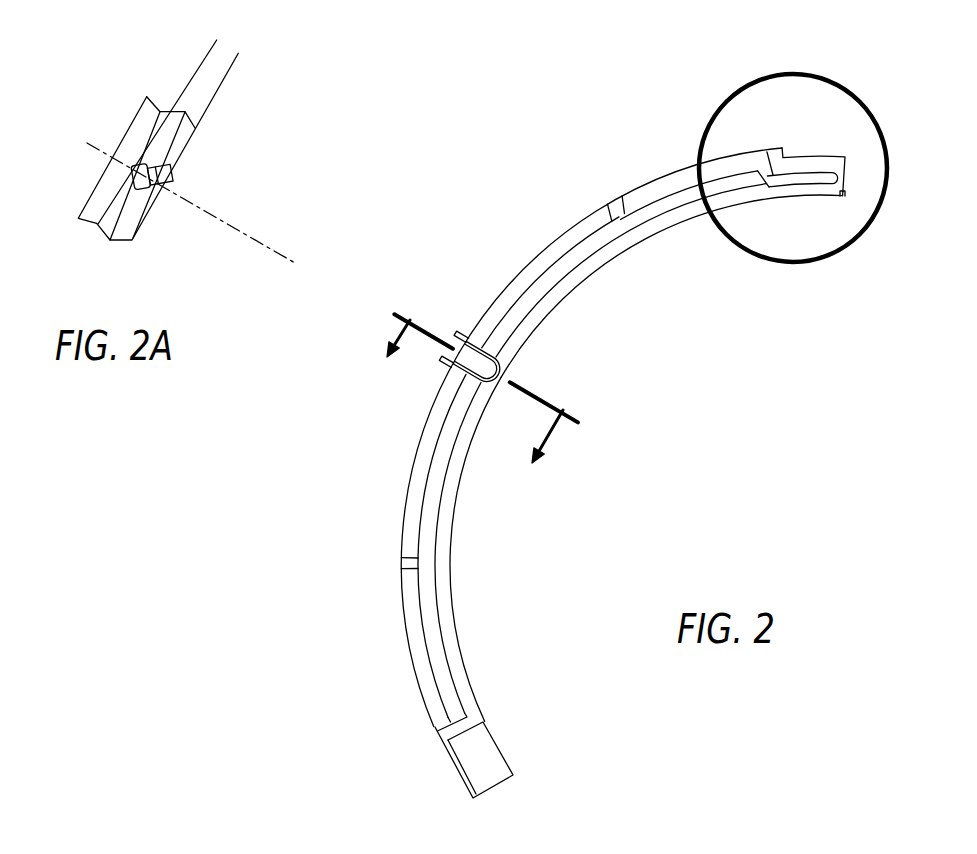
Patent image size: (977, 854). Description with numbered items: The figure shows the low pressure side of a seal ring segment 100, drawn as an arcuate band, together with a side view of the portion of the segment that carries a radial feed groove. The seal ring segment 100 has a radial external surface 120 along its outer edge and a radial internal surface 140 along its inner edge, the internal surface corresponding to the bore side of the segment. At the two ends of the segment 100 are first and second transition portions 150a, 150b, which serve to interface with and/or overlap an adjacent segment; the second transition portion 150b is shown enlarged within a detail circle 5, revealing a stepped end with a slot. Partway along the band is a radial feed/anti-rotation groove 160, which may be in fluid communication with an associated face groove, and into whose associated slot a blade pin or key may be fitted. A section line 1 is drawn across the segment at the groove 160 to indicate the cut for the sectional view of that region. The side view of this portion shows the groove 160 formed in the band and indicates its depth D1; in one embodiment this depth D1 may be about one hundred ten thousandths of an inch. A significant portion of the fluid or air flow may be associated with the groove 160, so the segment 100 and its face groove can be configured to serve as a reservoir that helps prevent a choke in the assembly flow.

In FIG. 2, the seal ring segment 100 is at (610, 442).
In FIG. 2, the radial external surface 120 is at (547, 233).
In FIG. 2, the radial internal surface 140 is at (462, 545).
In FIG. 2A, the radial feed/anti-rotation groove 160 is at (173, 185).
In FIG. 2, the radial feed/anti-rotation groove 160 is at (495, 350).
In FIG. 2, the first transition portion 150a is at (457, 812).
In FIG. 2, the second transition portion 150b is at (847, 137).
In FIG. 2, the detail circle of FIG. 5 is at (880, 130).
In FIG. 2, the section line 1- 1 is at (480, 376).
In FIG. 2A, the depth of the radial feed/anti-rotation groove D1 is at (183, 35).